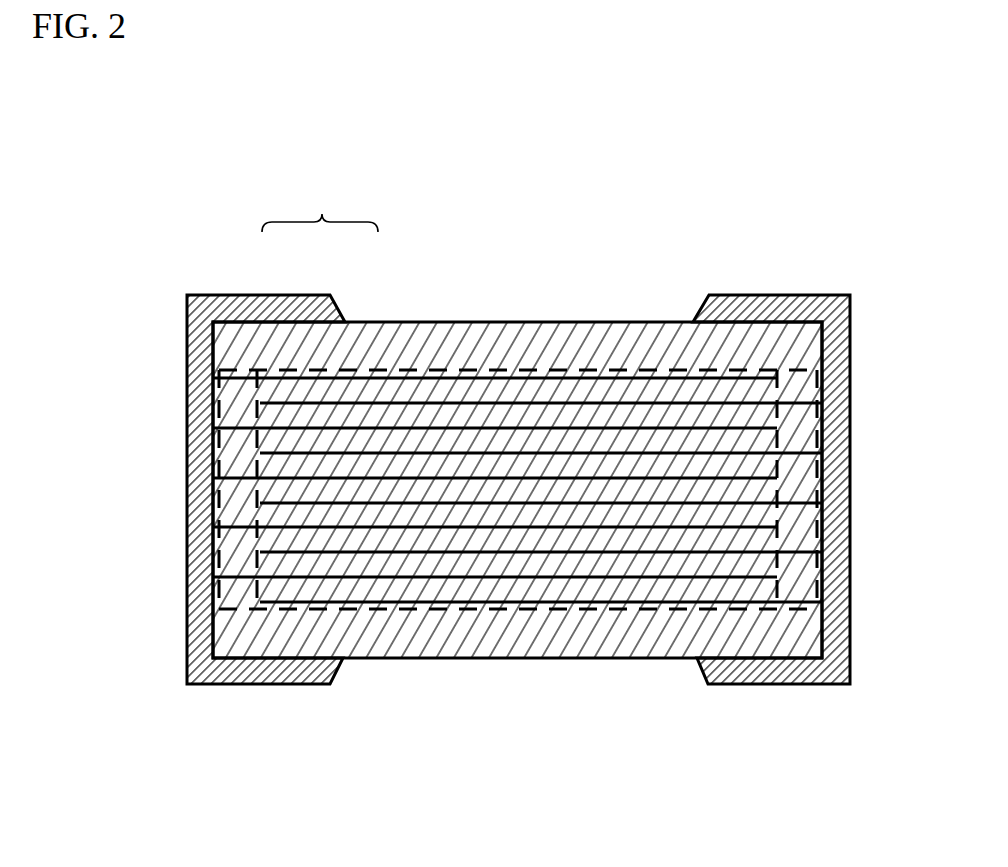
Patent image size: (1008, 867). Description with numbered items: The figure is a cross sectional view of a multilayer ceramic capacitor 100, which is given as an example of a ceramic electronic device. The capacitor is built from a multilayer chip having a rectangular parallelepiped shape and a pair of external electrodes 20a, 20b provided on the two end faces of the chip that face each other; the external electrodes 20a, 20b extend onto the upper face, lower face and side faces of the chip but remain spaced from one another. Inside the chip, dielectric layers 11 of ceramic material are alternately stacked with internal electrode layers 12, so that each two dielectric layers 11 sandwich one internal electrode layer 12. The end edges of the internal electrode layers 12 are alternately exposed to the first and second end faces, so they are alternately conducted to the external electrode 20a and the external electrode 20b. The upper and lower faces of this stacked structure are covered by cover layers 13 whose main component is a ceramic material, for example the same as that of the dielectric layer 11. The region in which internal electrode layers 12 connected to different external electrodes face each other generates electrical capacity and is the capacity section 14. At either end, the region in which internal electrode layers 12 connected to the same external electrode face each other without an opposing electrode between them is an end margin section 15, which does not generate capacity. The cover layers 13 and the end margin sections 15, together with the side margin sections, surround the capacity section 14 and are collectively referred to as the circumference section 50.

The multilayer ceramic capacitor 100 is at (748, 238).
The external electrode 20a is at (210, 295).
The external electrode 20b is at (812, 295).
The dielectric layer 11 is at (642, 563).
The internal electrode layer 12 is at (497, 530).
The cover layer 13 is at (366, 352).
The capacity section 14 is at (523, 370).
The end margin section 15 is at (242, 368).
The circumference section 50 is at (320, 204).